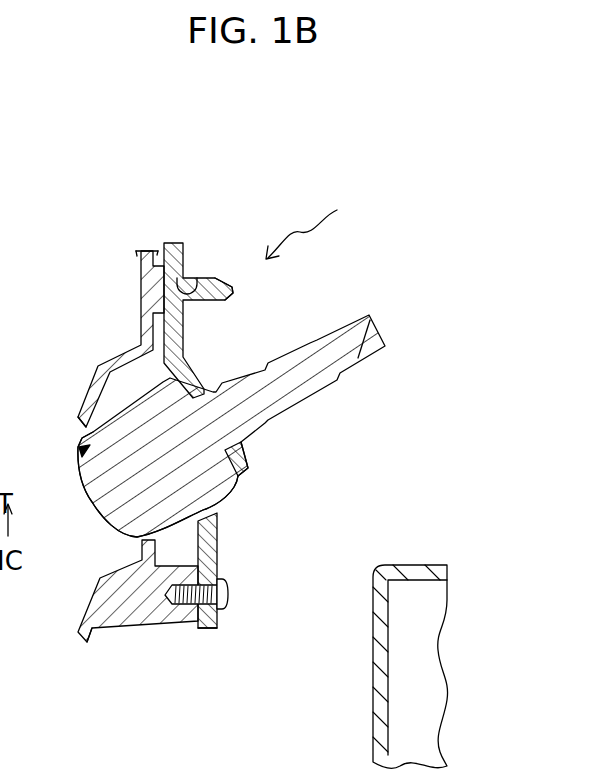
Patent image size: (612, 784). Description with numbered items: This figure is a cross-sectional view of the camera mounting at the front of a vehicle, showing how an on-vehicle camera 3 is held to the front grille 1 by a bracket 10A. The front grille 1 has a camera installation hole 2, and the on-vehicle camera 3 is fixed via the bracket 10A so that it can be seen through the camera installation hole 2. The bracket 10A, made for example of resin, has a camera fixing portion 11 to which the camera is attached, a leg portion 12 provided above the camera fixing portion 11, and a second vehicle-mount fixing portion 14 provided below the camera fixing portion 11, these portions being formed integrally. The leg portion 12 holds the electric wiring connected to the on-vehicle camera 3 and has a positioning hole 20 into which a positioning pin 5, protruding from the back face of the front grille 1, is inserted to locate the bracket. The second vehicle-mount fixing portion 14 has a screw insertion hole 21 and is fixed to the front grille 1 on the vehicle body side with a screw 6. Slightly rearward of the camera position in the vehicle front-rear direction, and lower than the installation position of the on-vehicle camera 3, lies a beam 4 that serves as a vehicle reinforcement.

The front grille 1 is at (109, 367).
The camera installation hole 2 is at (78, 425).
The on-vehicle camera 3 is at (97, 505).
The beam (reinforcement) 4 is at (408, 568).
The positioning pin 5 is at (235, 292).
The screw 6 is at (229, 598).
The bracket 10A is at (324, 222).
The camera fixing portion 11 is at (207, 382).
The leg portion 12 is at (175, 241).
The second vehicle-mount fixing portion 14 is at (219, 544).
The positioning hole 20 is at (196, 286).
The screw insertion hole 21 is at (212, 630).